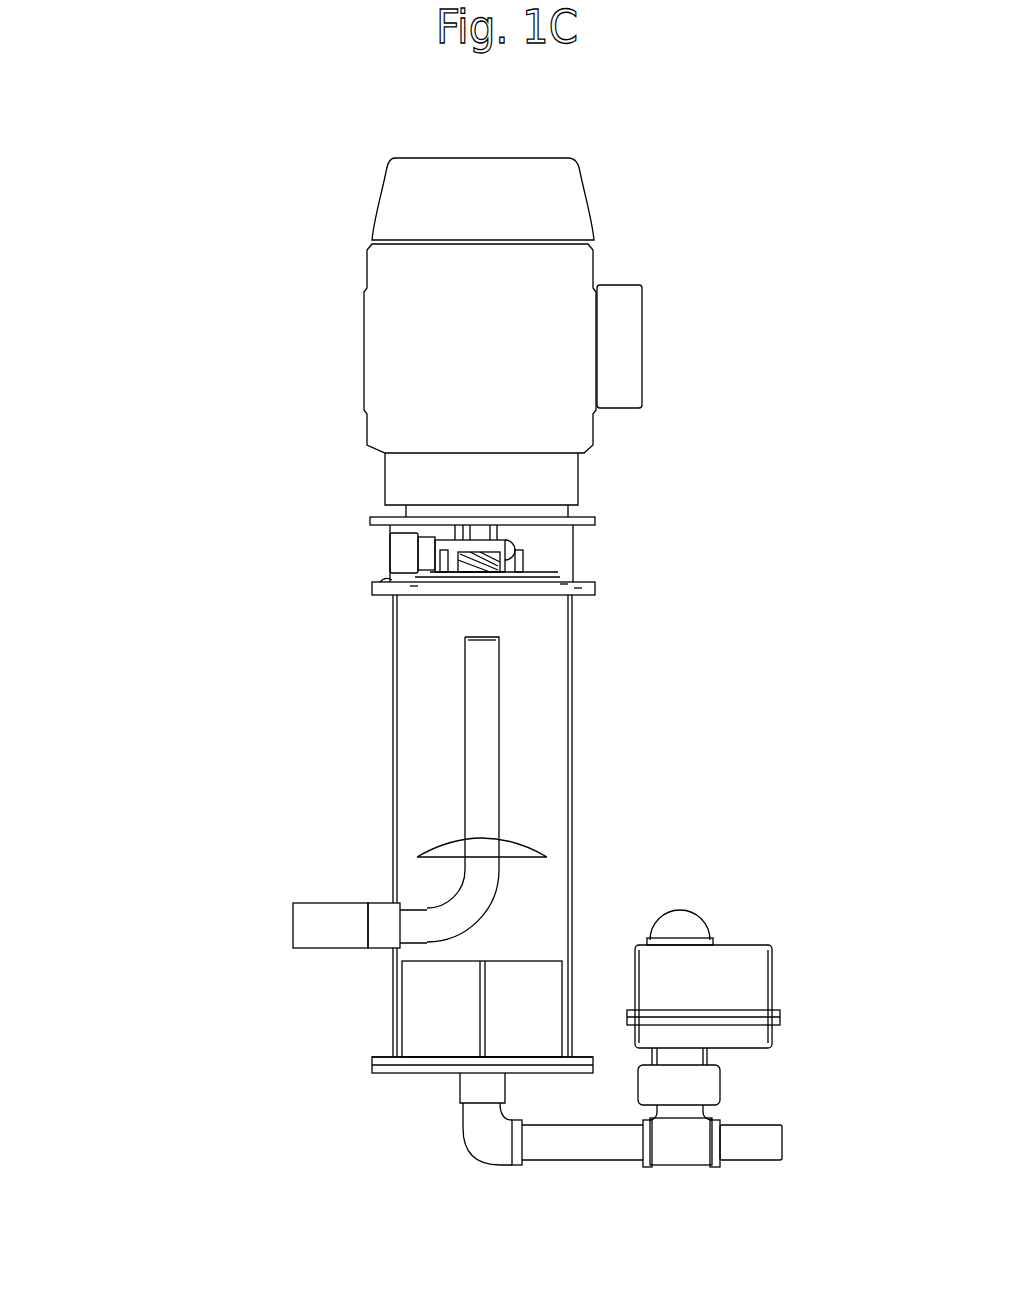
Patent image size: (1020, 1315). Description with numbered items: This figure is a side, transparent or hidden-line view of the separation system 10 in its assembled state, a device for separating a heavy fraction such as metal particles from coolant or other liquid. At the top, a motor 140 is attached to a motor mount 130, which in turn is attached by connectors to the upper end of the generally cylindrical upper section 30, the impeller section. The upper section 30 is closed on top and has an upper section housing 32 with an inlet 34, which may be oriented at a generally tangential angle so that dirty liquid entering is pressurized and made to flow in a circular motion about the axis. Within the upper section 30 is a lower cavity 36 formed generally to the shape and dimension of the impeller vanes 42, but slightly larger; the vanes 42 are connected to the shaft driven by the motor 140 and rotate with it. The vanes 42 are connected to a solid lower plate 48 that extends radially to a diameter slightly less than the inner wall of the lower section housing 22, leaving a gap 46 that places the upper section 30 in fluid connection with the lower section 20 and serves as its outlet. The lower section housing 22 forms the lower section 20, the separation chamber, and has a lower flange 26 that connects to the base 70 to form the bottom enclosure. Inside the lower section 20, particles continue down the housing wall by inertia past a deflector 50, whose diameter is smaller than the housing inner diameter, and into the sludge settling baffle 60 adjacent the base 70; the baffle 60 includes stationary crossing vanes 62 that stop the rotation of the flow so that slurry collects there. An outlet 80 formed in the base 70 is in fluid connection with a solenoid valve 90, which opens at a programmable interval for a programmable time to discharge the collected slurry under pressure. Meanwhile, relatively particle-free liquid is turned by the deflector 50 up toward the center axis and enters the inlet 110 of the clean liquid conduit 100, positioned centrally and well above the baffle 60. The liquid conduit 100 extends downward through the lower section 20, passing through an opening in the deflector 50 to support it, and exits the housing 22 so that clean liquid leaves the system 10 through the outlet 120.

The separation system 10 is at (174, 165).
The lower section 20 is at (408, 826).
The lower section housing 22 is at (392, 726).
The lower flange 26 is at (372, 1062).
The upper section 30 is at (602, 540).
The upper section housing 32 is at (577, 556).
The inlet 34 is at (387, 547).
The lower cavity 36 is at (563, 585).
The vanes 42 is at (396, 588).
The gap 46 is at (577, 588).
The lower plate 48 is at (415, 587).
The deflector 50 is at (532, 844).
The baffle 60 is at (398, 1007).
The crossing vanes 62 is at (445, 958).
The base 70 is at (364, 1070).
The outlet 80 is at (458, 1087).
The solenoid valve 90 is at (782, 973).
The liquid conduit 100 is at (499, 751).
The inlet 110 is at (483, 632).
The outlet 120 is at (300, 920).
The motor mount 130 is at (367, 518).
The motor 140 is at (358, 312).